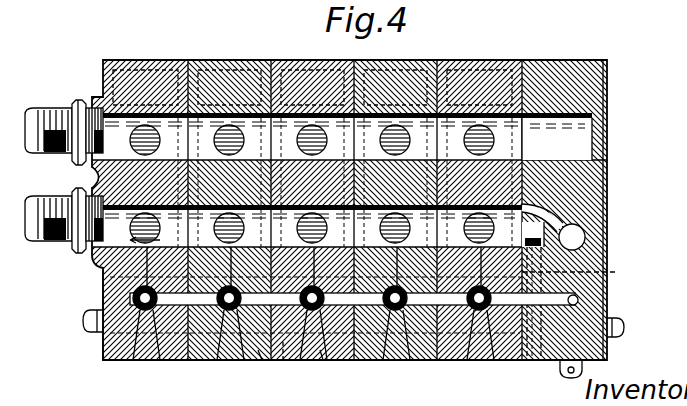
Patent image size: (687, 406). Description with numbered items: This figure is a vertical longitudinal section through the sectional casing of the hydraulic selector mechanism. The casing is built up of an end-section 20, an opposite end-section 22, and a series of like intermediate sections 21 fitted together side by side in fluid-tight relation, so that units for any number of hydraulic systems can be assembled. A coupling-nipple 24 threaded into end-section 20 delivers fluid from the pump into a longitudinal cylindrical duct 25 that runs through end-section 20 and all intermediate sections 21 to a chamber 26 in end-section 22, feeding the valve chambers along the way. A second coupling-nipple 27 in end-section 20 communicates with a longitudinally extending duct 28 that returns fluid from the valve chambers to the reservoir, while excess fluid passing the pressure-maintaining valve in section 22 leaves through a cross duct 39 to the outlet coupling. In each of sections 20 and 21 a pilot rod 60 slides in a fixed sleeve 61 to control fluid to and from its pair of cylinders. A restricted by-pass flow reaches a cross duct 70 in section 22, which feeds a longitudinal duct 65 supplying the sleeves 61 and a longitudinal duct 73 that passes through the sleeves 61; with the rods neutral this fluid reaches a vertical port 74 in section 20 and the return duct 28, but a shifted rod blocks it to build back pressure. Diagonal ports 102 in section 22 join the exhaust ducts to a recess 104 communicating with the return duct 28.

The end-section 20 is at (150, 61).
The intermediate sections 21 is at (238, 58).
The opposite end-section 22 is at (556, 58).
The coupling-nipple 24 is at (53, 109).
The longitudinal cylindrical duct 25 is at (349, 136).
The chamber 26 is at (583, 162).
The coupling-nipple 27 is at (46, 243).
The longitudinally extending duct 28 is at (307, 226).
The cross duct 39 is at (585, 239).
The pilot rod 60 is at (133, 360).
The fixed sleeve 61 is at (160, 360).
The longitudinal duct 65 is at (284, 360).
The cross duct 70 is at (578, 303).
The longitudinal duct 73 is at (262, 360).
The vertical port 74 is at (103, 282).
The diagonal ports 102 is at (585, 303).
The recess 104 is at (550, 226).